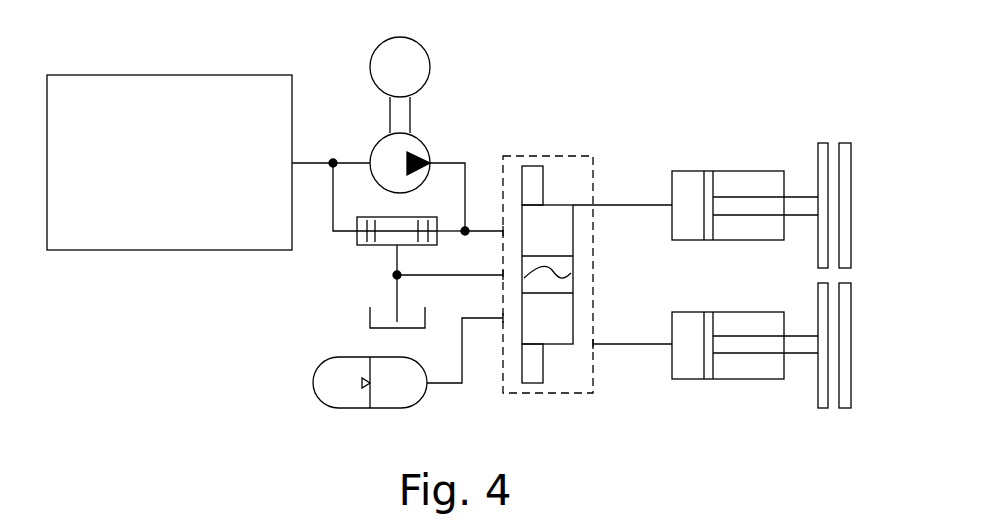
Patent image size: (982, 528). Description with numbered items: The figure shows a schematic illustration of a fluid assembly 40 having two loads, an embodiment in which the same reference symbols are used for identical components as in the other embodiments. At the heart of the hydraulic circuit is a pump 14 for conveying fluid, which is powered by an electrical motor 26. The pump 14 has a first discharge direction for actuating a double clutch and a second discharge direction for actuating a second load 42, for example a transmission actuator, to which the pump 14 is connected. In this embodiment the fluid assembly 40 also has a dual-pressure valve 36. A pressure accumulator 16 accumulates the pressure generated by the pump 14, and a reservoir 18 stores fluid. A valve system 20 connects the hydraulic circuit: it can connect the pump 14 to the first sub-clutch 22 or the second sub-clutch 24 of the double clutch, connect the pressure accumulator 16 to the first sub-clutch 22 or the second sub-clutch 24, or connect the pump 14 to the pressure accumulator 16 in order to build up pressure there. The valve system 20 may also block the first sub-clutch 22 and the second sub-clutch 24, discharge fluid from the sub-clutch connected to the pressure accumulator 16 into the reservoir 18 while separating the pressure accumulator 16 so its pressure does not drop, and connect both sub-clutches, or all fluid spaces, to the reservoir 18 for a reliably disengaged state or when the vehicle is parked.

The second load 42 is at (172, 252).
The electrical motor 26 is at (427, 52).
The pump 14 is at (423, 146).
The dual-pressure valve 36 is at (350, 245).
The reservoir 18 is at (368, 318).
The pressure accumulator 16 is at (338, 408).
The valve system 20 is at (560, 156).
The fluid assembly 40 is at (692, 100).
The first sub-clutch 22 is at (851, 139).
The second sub-clutch 24 is at (851, 411).